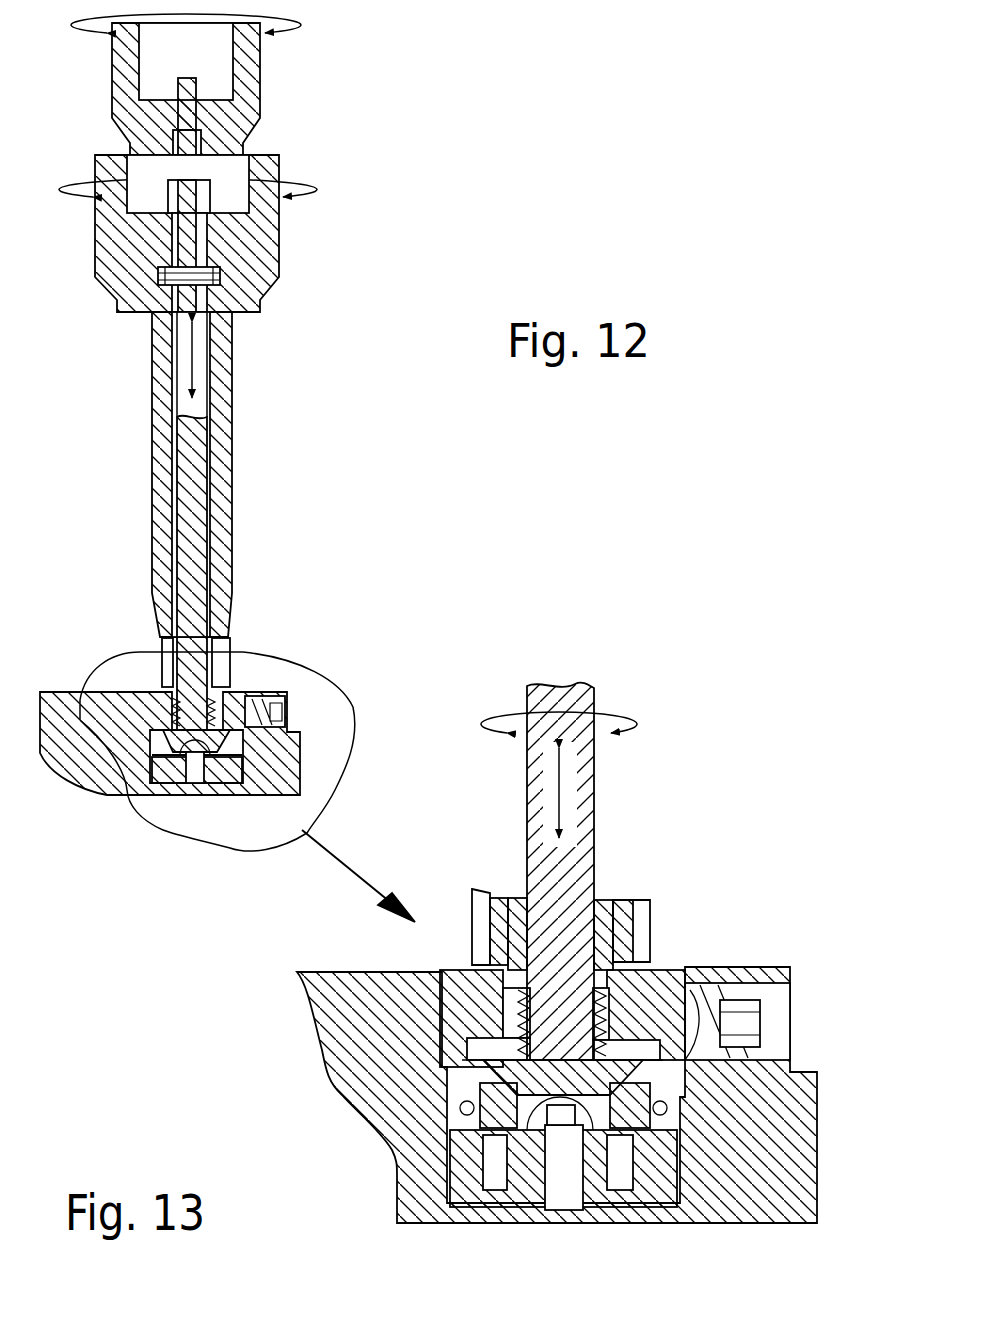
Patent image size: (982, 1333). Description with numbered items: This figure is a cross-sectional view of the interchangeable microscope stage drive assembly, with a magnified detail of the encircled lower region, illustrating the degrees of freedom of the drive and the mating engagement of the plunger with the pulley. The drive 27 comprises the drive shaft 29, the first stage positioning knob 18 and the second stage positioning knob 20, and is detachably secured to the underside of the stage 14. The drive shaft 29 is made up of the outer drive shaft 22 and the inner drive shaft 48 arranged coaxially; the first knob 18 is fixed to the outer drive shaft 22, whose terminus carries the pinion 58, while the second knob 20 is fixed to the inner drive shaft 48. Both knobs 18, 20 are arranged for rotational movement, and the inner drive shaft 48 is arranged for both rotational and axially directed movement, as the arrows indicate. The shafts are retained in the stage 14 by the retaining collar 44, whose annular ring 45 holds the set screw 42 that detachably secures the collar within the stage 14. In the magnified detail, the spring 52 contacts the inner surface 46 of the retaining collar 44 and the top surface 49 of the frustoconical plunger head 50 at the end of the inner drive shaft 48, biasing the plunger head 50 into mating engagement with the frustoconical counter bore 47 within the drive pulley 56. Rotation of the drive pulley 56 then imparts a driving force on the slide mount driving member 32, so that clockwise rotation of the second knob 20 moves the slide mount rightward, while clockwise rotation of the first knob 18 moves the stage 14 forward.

In FIG. 12, the stage 14 is at (72, 728).
In FIG. 13, the stage 14 is at (343, 1030).
In FIG. 12, the first stage positioning knob 18 is at (262, 232).
In FIG. 12, the second stage positioning knob 20 is at (248, 95).
In FIG. 12, the outer drive shaft 22 is at (227, 492).
In FIG. 13, the outer drive shaft 22 is at (623, 905).
In FIG. 12, the drive 27 is at (380, 166).
In FIG. 12, the drive shaft 29 is at (235, 388).
In FIG. 12, the slide mount driving member 32 is at (240, 785).
In FIG. 13, the slide mount driving member 32 is at (480, 1112).
In FIG. 12, the set screw 42 is at (275, 706).
In FIG. 13, the set screw 42 is at (750, 1030).
In FIG. 13, the retaining collar 44 is at (467, 990).
In FIG. 13, the annular ring 45 is at (525, 995).
In FIG. 13, the inner surface 46 is at (502, 993).
In FIG. 13, the counter bore 47 is at (687, 1222).
In FIG. 12, the inner drive shaft 48 is at (200, 425).
In FIG. 13, the inner drive shaft 48 is at (578, 930).
In FIG. 13, the top surface 49 is at (700, 1000).
In FIG. 12, the plunger head 50 is at (217, 757).
In FIG. 13, the plunger head 50 is at (618, 1075).
In FIG. 12, the spring 52 is at (225, 672).
In FIG. 13, the spring 52 is at (612, 1050).
In FIG. 12, the drive pulley 56 is at (170, 728).
In FIG. 13, the drive pulley 56 is at (490, 1085).
In FIG. 12, the pinion 58 is at (158, 640).
In FIG. 13, the pinion 58 is at (480, 905).